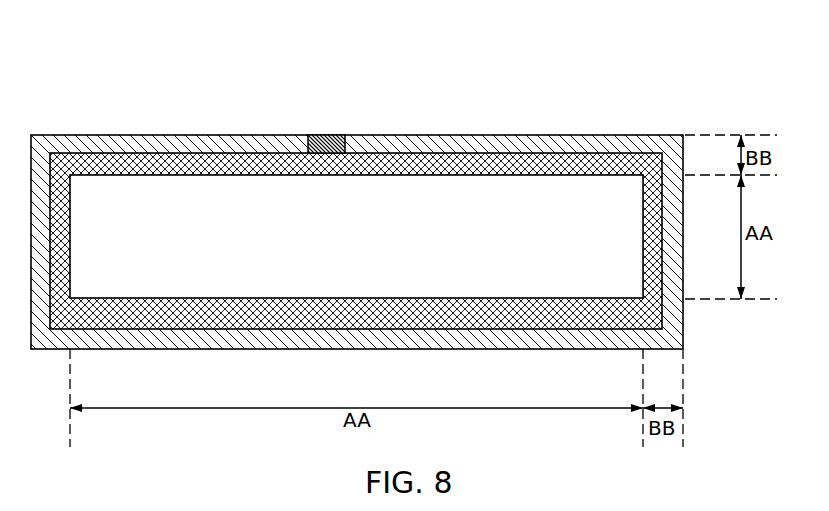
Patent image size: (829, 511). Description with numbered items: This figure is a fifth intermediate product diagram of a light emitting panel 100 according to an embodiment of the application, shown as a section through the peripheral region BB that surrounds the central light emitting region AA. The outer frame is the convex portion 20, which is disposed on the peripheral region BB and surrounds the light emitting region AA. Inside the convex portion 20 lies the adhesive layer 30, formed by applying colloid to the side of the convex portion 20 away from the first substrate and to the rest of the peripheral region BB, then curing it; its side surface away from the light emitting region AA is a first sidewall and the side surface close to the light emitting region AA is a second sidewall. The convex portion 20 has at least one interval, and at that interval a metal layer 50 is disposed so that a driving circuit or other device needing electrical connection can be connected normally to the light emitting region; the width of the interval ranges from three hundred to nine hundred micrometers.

The housing assembly 100 is at (400, 28).
The convex portion 20 is at (133, 137).
The adhesive layer 30 is at (410, 170).
The metal layer 50 is at (322, 135).